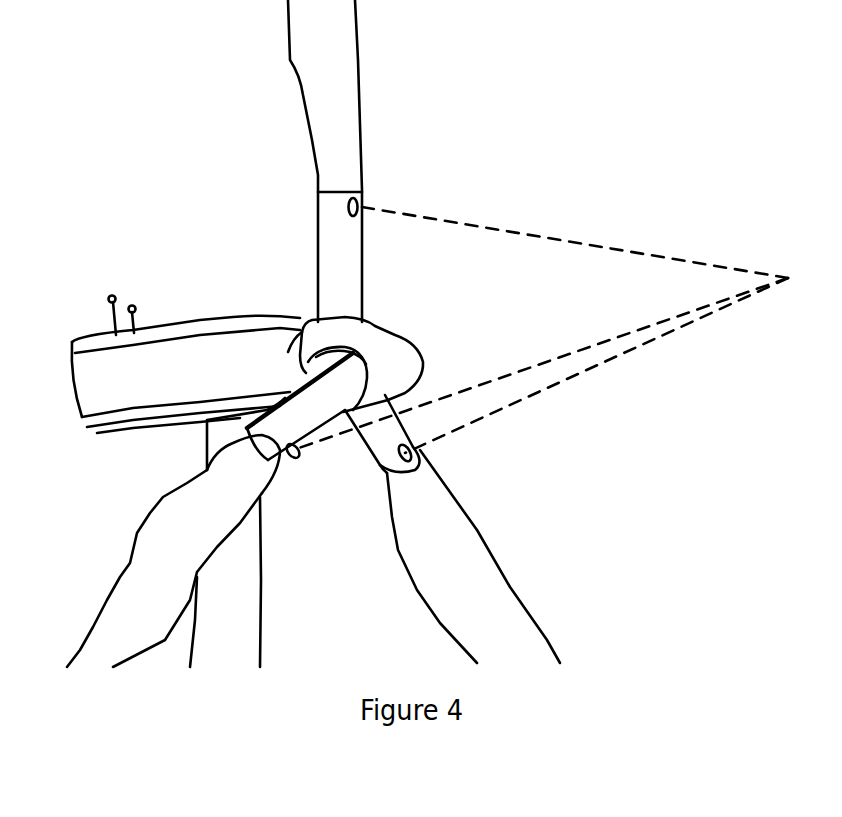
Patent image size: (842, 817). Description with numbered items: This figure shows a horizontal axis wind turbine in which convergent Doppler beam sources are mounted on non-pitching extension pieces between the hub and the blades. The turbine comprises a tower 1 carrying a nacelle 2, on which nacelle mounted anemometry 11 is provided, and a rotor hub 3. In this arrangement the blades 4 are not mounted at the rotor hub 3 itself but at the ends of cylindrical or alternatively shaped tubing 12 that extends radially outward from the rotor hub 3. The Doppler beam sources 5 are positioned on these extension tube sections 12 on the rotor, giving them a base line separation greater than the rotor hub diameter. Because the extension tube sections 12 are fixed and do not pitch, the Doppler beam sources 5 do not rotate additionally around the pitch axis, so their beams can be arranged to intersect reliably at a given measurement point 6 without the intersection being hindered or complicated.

The tower 1 is at (262, 637).
The nacelle 2 is at (80, 388).
The rotor hub 3 is at (358, 352).
The blades 4 is at (300, 106).
The Doppler beam sources 5 is at (348, 207).
The measurement point 6 is at (790, 280).
The nacelle mounted anemometry 11 is at (105, 296).
The tubing 12 is at (318, 255).